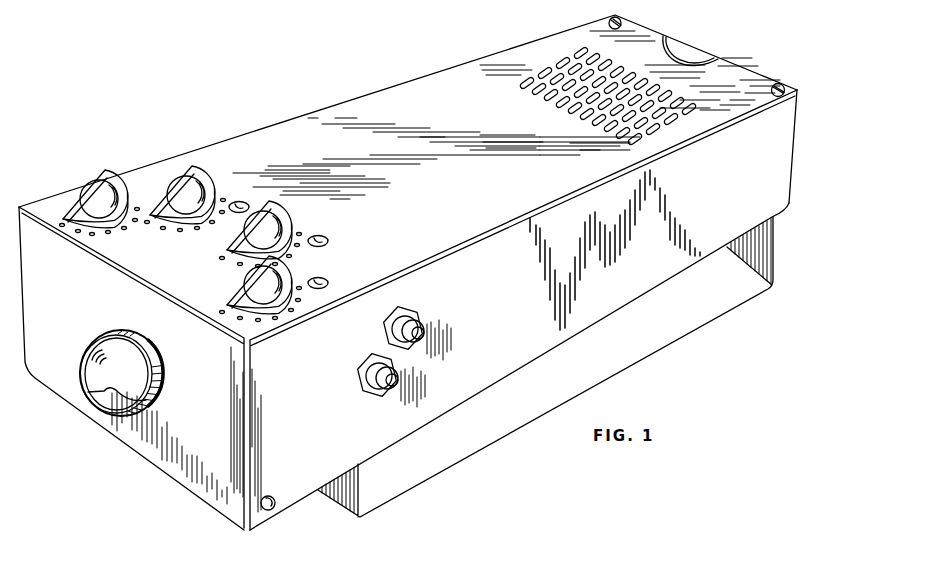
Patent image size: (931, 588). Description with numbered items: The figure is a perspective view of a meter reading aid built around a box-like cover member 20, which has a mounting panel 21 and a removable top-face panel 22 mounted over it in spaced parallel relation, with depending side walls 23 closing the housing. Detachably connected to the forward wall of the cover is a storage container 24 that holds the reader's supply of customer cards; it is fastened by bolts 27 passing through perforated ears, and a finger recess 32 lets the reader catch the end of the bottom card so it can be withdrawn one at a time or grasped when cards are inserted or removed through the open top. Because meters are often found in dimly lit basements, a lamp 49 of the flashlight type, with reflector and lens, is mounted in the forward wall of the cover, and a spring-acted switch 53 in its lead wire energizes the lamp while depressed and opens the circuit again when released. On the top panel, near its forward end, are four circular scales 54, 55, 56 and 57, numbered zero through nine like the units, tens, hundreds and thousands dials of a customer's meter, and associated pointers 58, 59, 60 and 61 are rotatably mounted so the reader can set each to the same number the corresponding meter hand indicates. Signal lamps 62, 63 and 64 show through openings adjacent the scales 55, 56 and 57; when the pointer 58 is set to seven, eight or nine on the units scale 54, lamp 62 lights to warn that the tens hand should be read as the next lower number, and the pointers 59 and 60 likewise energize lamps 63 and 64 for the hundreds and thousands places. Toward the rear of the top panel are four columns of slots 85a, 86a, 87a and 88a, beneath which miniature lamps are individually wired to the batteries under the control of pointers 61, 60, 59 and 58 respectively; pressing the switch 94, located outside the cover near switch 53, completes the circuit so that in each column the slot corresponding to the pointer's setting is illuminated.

The box-like cover member 20 is at (165, 489).
The mounting panel 21 is at (688, 58).
The removable top-face panel 22 is at (410, 90).
The depending side walls 23 is at (310, 494).
The storage container 24 is at (458, 455).
The bolts 27 is at (270, 514).
The finger recess 32 is at (222, 0).
The lamp 49 is at (90, 391).
The switch 53 is at (381, 399).
The units scale 54 is at (86, 232).
The tens scale 55 is at (166, 233).
The hundreds scale 56 is at (212, 259).
The thousands scale 57 is at (222, 319).
The pointer 58 is at (108, 172).
The pointer 59 is at (182, 168).
The pointer 60 is at (272, 206).
The pointer 61 is at (284, 272).
The signal lamp 62 is at (241, 200).
The signal lamp 63 is at (319, 237).
The signal lamp 64 is at (328, 284).
The column of slots 85a is at (524, 78).
The column of slots 86a is at (543, 68).
The column of slots 87a is at (562, 58).
The column of slots 88a is at (583, 48).
The switch 94 is at (424, 331).